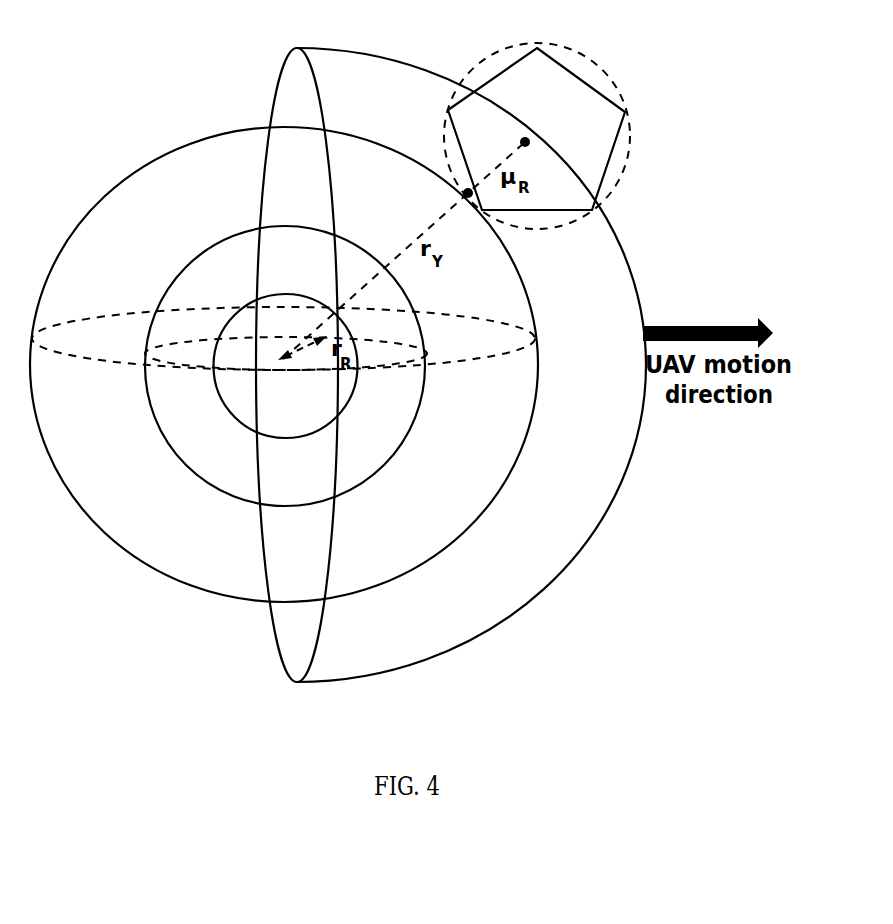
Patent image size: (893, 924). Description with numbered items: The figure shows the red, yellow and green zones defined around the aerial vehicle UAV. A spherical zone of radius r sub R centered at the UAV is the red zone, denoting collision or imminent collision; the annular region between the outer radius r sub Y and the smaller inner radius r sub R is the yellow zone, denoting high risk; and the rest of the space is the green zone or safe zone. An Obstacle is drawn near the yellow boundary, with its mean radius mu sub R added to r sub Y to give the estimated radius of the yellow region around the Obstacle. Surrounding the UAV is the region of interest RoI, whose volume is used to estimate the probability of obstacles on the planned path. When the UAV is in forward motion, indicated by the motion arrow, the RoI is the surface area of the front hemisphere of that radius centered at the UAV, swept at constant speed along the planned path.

The aerial vehicle UAV is at (286, 366).
The region of interest RoI is at (471, 365).
The obstacle Obstacle is at (537, 136).